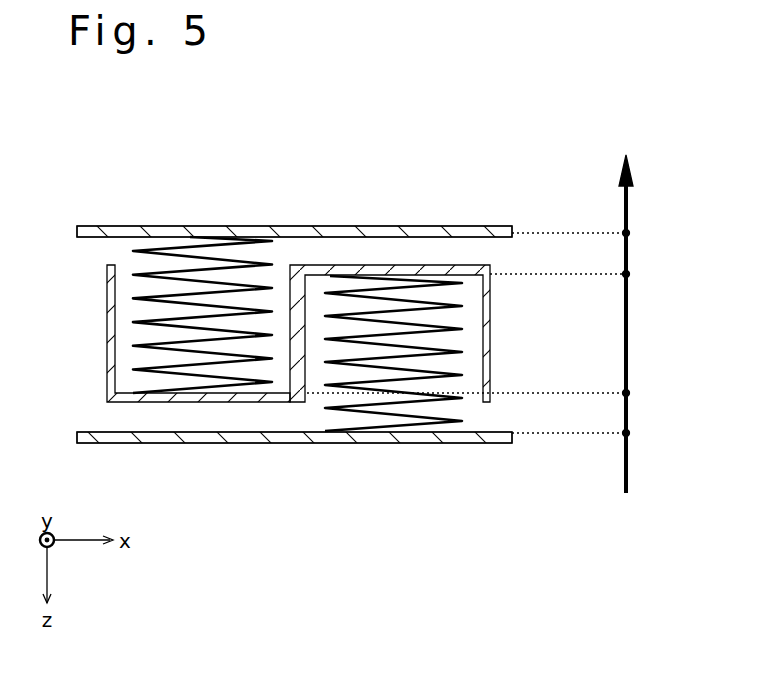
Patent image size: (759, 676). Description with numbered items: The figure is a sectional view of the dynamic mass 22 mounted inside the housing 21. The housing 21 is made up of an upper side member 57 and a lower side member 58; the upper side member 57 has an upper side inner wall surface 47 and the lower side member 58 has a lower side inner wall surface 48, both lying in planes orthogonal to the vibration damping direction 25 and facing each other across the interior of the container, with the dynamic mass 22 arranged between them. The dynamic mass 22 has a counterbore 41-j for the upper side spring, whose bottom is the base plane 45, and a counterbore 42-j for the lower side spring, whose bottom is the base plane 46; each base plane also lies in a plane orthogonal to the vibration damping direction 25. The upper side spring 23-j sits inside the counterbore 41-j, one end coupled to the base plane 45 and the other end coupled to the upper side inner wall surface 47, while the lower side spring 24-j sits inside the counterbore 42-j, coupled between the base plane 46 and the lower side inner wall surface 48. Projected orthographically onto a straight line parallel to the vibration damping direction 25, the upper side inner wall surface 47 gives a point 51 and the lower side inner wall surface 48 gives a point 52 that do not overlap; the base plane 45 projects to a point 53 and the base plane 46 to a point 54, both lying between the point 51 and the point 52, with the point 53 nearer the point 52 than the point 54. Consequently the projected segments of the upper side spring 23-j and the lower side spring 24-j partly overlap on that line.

The housing 21 is at (138, 228).
The dynamic mass 22 is at (107, 327).
The upper side spring 23-j is at (218, 245).
The lower side spring 24-j is at (394, 431).
The vibration damping direction 25 is at (628, 204).
The counterbore for the upper side spring 41-j is at (145, 288).
The counterbore for the lower side spring 42-j is at (451, 386).
The base plane 45 is at (126, 393).
The base plane 46 is at (463, 276).
The upper side inner wall surface 47 is at (359, 237).
The lower side inner wall surface 48 is at (248, 432).
The point 51 is at (628, 234).
The point 52 is at (628, 434).
The point 53 is at (628, 394).
The point 54 is at (628, 275).
The upper side member 57 is at (390, 228).
The lower side member 58 is at (215, 438).